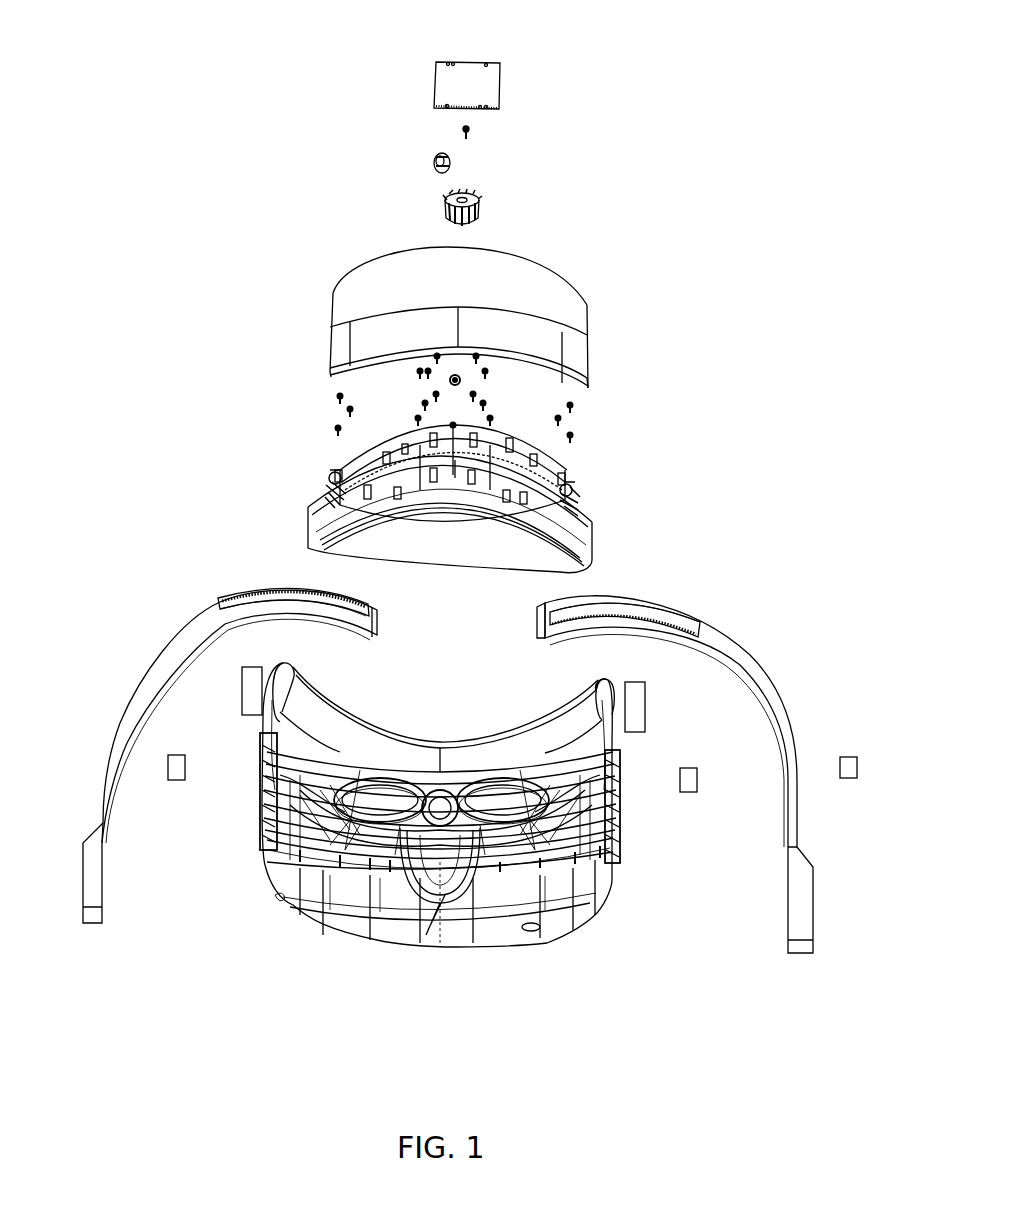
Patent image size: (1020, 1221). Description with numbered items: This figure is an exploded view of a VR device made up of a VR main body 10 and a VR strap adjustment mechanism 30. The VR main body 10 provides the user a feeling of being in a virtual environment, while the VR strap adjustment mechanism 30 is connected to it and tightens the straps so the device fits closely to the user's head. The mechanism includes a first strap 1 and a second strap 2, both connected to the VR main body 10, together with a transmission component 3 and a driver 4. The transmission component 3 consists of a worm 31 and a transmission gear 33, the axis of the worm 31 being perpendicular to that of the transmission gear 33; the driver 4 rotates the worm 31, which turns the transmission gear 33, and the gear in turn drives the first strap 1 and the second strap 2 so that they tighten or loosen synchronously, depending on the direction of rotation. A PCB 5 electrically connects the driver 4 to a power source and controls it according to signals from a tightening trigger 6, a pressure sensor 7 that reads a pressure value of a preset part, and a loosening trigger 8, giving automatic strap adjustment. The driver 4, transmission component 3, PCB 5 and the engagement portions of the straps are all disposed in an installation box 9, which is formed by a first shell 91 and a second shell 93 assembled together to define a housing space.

The first strap 1 is at (188, 627).
The second strap 2 is at (767, 678).
The transmission component 3 is at (268, 158).
The worm 31 is at (432, 158).
The transmission gear 33 is at (443, 212).
The driver 4 is at (470, 133).
The PCB 5 is at (487, 88).
The tightening trigger 6 is at (177, 780).
The pressure sensor 7 is at (686, 792).
The loosening trigger 8 is at (848, 778).
The installation box 9 is at (796, 272).
The first shell 91 is at (573, 302).
The second shell 93 is at (593, 525).
The VR main body 10 is at (455, 940).
The VR strap adjustment mechanism 30 is at (303, 362).